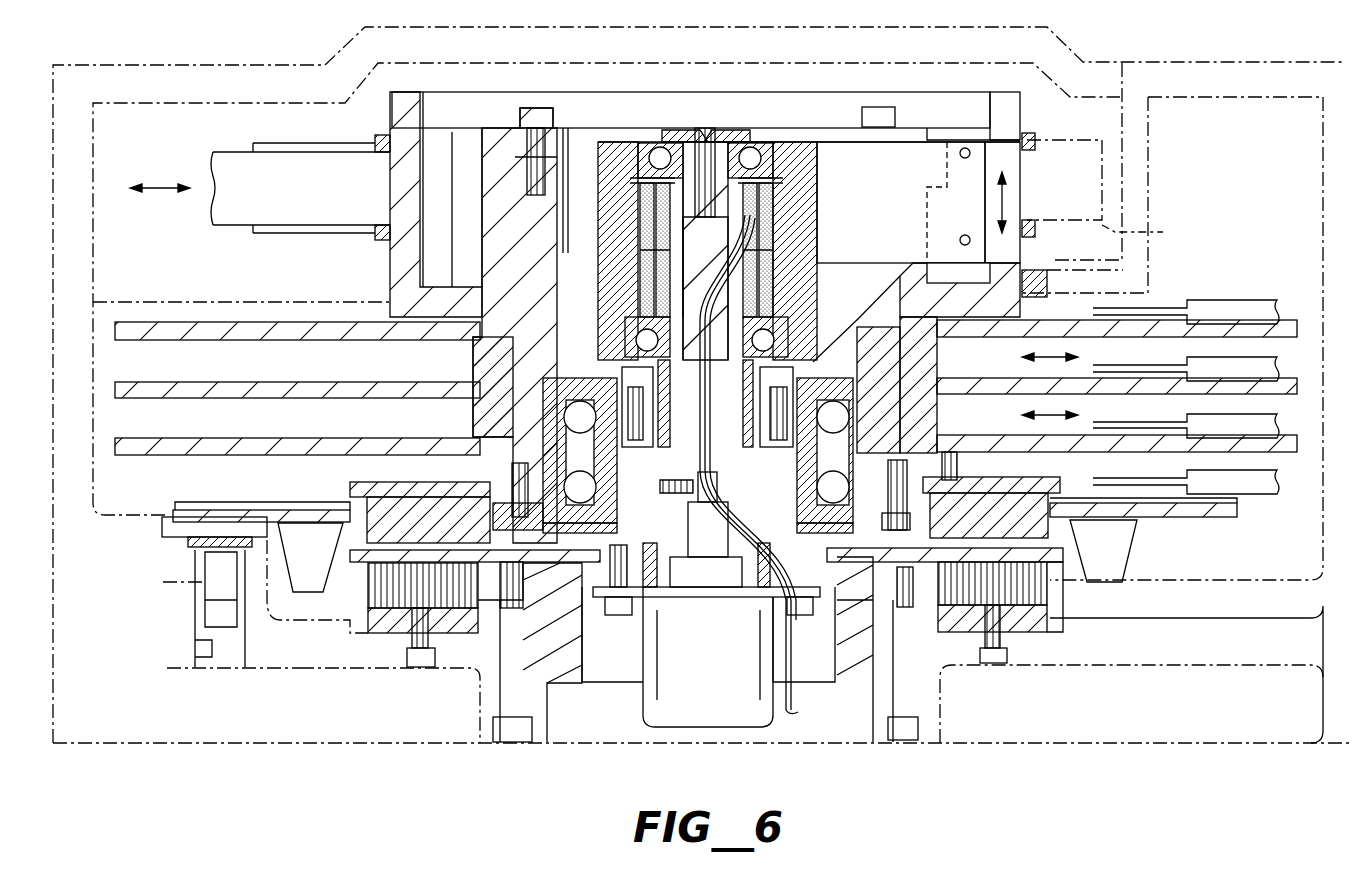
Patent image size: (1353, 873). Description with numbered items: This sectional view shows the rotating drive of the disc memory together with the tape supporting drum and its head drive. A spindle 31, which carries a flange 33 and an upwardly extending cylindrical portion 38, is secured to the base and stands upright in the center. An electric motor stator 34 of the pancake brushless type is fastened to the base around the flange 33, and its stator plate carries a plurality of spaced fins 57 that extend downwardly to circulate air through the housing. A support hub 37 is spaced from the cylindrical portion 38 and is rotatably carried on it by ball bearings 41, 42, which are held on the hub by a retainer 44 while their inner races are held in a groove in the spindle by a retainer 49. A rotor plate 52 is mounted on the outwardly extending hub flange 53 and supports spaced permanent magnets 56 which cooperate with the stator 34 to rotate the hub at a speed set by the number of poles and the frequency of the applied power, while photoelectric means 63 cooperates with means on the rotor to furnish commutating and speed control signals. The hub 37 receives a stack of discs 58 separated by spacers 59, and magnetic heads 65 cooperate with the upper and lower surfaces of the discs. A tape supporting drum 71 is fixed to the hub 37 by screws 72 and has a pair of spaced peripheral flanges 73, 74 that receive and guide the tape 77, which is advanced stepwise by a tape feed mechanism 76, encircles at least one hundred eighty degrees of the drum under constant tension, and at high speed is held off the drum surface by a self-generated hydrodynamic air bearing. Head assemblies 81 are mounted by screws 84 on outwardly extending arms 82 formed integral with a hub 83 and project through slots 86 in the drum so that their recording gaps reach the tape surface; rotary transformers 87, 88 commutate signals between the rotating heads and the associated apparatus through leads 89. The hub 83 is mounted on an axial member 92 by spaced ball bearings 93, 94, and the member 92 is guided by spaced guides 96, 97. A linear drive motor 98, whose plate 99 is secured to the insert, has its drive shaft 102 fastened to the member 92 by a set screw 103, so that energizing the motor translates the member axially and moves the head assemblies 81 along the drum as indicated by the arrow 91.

The spindle 31 is at (572, 660).
The flange 33 is at (935, 582).
The electric motor stator 34 is at (1045, 590).
The support hub 37 is at (525, 232).
The cylindrical portion 38 is at (605, 372).
The ball bearing 41 is at (900, 383).
The ball bearing 42 is at (870, 460).
The retainer 44 is at (503, 460).
The retainer 49 is at (820, 357).
The rotor plate 52 is at (1240, 520).
The hub flange 53 is at (440, 470).
The permanent magnets 56 is at (1005, 510).
The fins 57 is at (315, 545).
The discs 58 is at (262, 385).
The spacers 59 is at (477, 352).
The photoelectric means 63 is at (205, 592).
The magnetic heads 65 is at (1095, 430).
The tape supporting drum 71 is at (412, 115).
The screws 72 is at (550, 112).
The flange 73 is at (380, 136).
The flange 74 is at (380, 238).
The tape feed mechanism 76 is at (1146, 234).
The tape 77 is at (1036, 165).
The head assemblies 81 is at (1005, 245).
The arms 82 is at (855, 158).
The hub 83 is at (805, 155).
The screws 84 is at (958, 238).
The slots 86 is at (1000, 108).
The rotary transformer 87 is at (768, 205).
The rotary transformer 88 is at (648, 205).
The leads 89 is at (792, 711).
The arrow 91 is at (1008, 200).
The axial member 92 is at (690, 252).
The ball bearing 93 is at (658, 147).
The ball bearing 94 is at (635, 330).
The guide 96 is at (648, 560).
The guide 97 is at (662, 447).
The linear drive motor 98 is at (672, 700).
The plate 99 is at (823, 600).
The drive shaft 102 is at (695, 514).
The set screw 103 is at (706, 572).